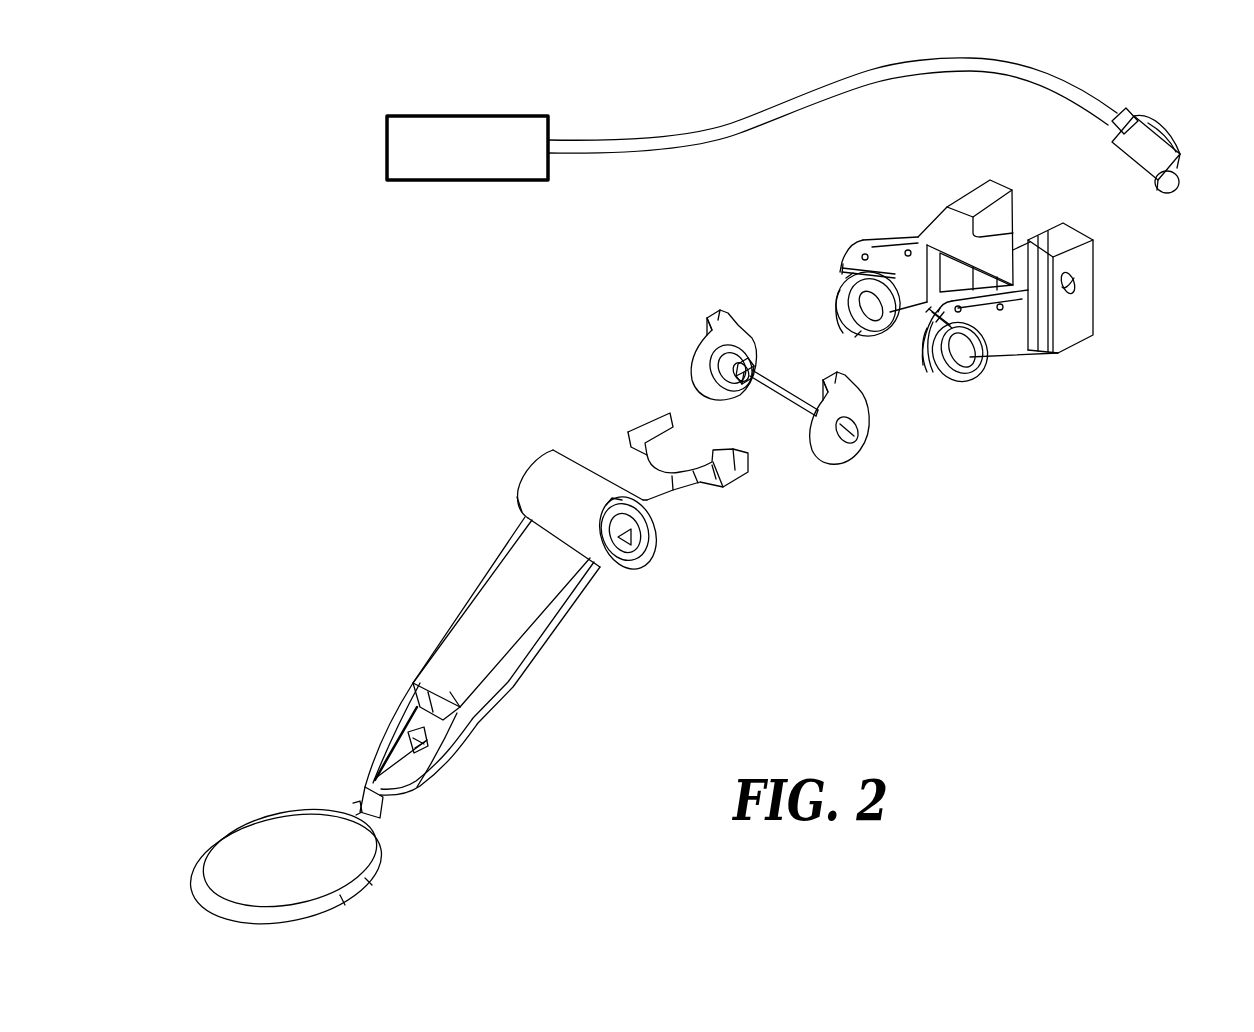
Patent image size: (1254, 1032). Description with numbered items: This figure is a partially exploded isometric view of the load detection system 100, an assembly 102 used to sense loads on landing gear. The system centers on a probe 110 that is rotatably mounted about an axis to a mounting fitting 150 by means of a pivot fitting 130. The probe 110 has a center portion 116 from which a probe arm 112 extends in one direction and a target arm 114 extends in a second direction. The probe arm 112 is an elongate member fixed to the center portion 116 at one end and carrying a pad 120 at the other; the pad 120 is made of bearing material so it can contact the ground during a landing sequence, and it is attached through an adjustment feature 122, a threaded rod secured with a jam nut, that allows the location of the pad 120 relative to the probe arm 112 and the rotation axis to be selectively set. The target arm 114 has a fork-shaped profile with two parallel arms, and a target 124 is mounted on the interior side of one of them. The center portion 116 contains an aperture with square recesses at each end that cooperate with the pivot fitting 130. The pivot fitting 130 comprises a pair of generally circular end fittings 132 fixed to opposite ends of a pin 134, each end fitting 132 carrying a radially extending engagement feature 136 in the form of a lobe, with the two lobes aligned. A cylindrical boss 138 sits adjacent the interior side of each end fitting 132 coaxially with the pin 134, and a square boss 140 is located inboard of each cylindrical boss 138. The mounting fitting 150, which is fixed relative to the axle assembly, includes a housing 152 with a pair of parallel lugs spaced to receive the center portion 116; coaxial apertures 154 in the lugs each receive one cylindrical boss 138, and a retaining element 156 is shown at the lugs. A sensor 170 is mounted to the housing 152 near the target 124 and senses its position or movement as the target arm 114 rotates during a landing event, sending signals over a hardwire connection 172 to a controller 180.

The load detection system 100 is at (318, 270).
The instrument assembly 102 is at (830, 535).
The probe 110 is at (590, 637).
The probe arm 112 is at (417, 673).
The target arm 114 is at (619, 463).
The center portion 116 is at (548, 468).
The pad 120 is at (265, 863).
The adjustment feature 122 is at (397, 758).
The target 124 is at (746, 456).
The pivot fitting 130 is at (831, 482).
The end fitting 132 is at (722, 320).
The pin 134 is at (785, 388).
The engagement feature 136 is at (708, 327).
The cylindrical boss 138 is at (743, 365).
The square boss 140 is at (752, 385).
The mounting fitting 150 is at (1092, 360).
The housing 152 is at (893, 330).
The aperture 154 is at (880, 272).
The clip 156 is at (920, 352).
The sensor 170 is at (1170, 184).
The hardwire connection 172 is at (1076, 89).
The controller 180 is at (387, 141).